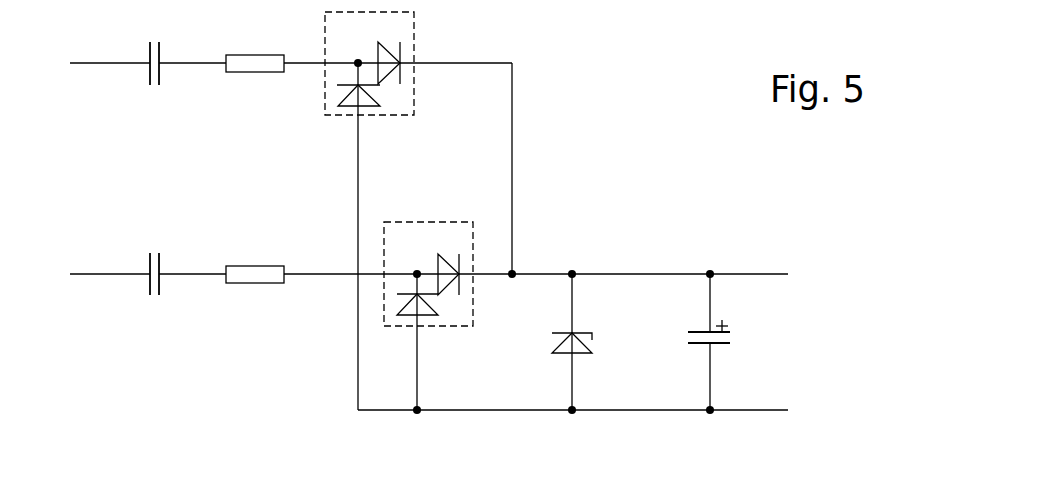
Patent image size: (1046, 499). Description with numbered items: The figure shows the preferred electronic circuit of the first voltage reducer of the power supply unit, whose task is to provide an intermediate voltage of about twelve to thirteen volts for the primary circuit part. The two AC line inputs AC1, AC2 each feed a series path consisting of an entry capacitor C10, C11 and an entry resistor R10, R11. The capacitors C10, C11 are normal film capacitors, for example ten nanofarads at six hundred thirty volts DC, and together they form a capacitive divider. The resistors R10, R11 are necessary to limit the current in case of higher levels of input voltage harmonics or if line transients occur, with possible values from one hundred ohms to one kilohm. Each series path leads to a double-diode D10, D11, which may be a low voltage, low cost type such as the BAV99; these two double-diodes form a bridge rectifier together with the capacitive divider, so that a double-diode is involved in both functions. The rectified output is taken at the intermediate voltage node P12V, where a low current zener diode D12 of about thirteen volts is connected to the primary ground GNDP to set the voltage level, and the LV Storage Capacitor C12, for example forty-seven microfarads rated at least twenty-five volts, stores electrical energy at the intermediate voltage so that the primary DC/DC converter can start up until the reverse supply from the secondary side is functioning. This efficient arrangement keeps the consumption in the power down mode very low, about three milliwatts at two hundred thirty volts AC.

The AC line input AC1 is at (110, 48).
The AC line input AC2 is at (110, 260).
The entry capacitor C10 is at (182, 51).
The entry capacitor C11 is at (182, 261).
The entry resistor R10 is at (292, 51).
The entry resistor R11 is at (321, 262).
The double-diode D10 is at (418, 211).
The double-diode D11 is at (448, 318).
The zener diode D12 is at (596, 342).
The LV Storage Capacitor C12 is at (768, 342).
The intermediate voltage output P12V is at (648, 170).
The primary ground GNDP is at (573, 426).